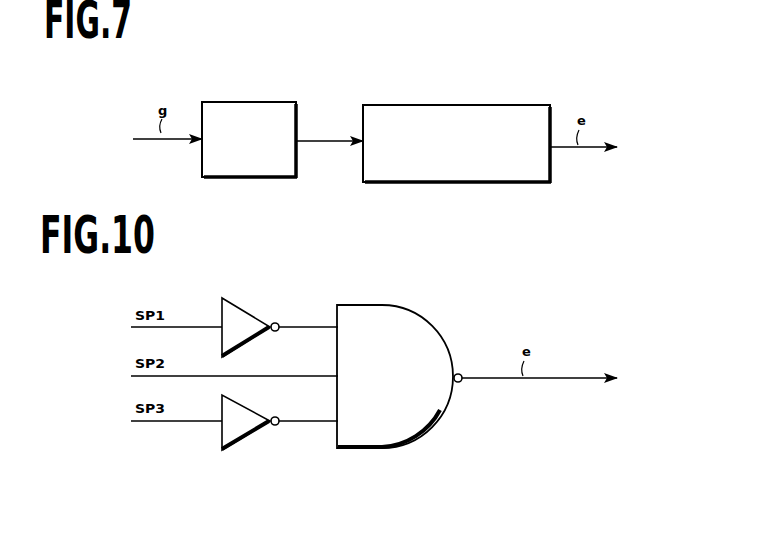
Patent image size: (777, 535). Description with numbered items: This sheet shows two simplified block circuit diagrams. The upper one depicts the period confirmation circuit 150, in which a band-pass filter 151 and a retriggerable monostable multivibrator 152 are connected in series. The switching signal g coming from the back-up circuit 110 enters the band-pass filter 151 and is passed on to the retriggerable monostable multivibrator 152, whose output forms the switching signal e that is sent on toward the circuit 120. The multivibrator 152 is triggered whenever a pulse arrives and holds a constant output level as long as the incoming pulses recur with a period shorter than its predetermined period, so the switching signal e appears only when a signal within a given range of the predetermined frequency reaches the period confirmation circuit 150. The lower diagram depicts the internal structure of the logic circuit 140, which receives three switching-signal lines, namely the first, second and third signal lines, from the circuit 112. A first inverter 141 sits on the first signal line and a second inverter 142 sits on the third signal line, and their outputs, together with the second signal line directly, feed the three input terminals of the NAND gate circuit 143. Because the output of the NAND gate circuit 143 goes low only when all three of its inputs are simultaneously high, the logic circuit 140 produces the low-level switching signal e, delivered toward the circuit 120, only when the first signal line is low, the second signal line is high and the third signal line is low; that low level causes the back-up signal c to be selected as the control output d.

In FIG. 7, the period confirmation circuit 150 is at (350, 216).
In FIG. 7, the band-pass filter 151 is at (281, 101).
In FIG. 7, the retriggerable monostable multivibrator 152 is at (533, 105).
In FIG. 7, the back-up circuit 110 is at (84, 137).
In FIG. 7, the following circuit (destination of signal e) 120 is at (654, 147).
In FIG. 10, the following circuit (destination of signal e) 120 is at (653, 382).
In FIG. 10, the preceding circuit (source of signals SP1-SP3) 112 is at (63, 374).
In FIG. 10, the logic circuit 140 is at (350, 511).
In FIG. 10, the first inverter 141 is at (262, 315).
In FIG. 10, the second inverter 142 is at (261, 433).
In FIG. 10, the NAND gate circuit 143 is at (437, 327).